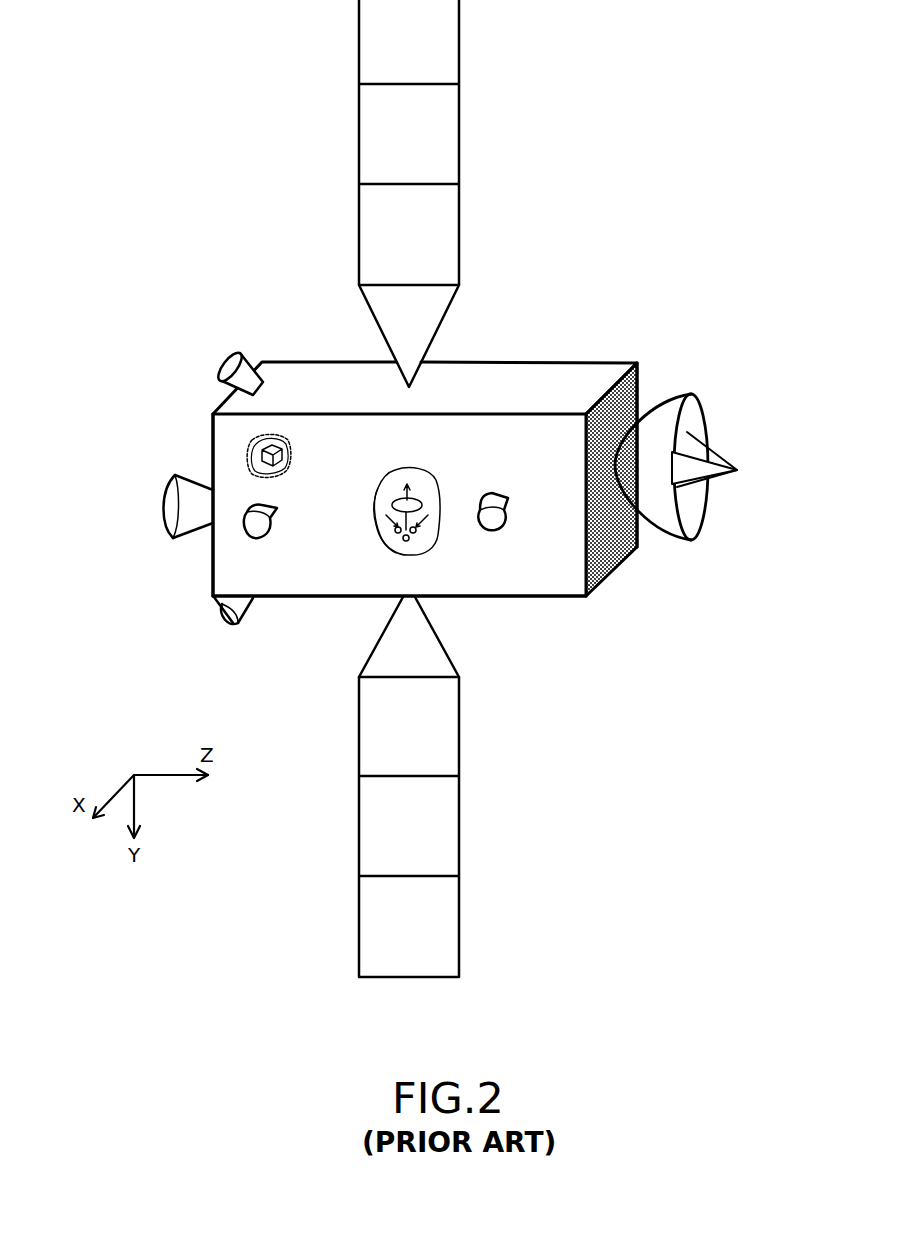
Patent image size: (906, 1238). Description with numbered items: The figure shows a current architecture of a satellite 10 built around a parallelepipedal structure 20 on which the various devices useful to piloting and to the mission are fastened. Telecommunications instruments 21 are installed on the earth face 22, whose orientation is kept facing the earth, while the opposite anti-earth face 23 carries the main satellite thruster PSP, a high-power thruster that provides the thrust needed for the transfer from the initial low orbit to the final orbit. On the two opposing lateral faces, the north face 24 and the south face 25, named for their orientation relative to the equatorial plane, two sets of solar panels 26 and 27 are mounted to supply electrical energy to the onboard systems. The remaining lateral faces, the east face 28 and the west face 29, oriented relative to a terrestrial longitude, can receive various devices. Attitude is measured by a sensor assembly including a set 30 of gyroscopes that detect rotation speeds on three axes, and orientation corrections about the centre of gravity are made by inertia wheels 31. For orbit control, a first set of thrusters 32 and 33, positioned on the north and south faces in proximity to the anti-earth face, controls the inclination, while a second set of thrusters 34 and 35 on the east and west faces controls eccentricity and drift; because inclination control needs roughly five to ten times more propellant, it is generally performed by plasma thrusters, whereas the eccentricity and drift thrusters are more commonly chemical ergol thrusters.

The satellite 10 is at (627, 210).
The parallelepipedal structure 20 is at (421, 481).
The telecommunications instruments 21 is at (690, 433).
The earth face 22 is at (607, 548).
The anti-earth face 23 is at (212, 447).
The north face 24 is at (492, 378).
The south face 25 is at (498, 597).
The solar panels 26 is at (440, 132).
The solar panels 27 is at (435, 820).
The east face 28 is at (352, 575).
The west face 29 is at (638, 393).
The set of gyroscopes 30 is at (288, 463).
The inertia wheels 31 is at (425, 490).
The thruster 32 is at (232, 362).
The thruster 33 is at (222, 605).
The thruster 34 is at (243, 523).
The thruster 35 is at (487, 520).
The main satellite thruster PSP is at (177, 503).